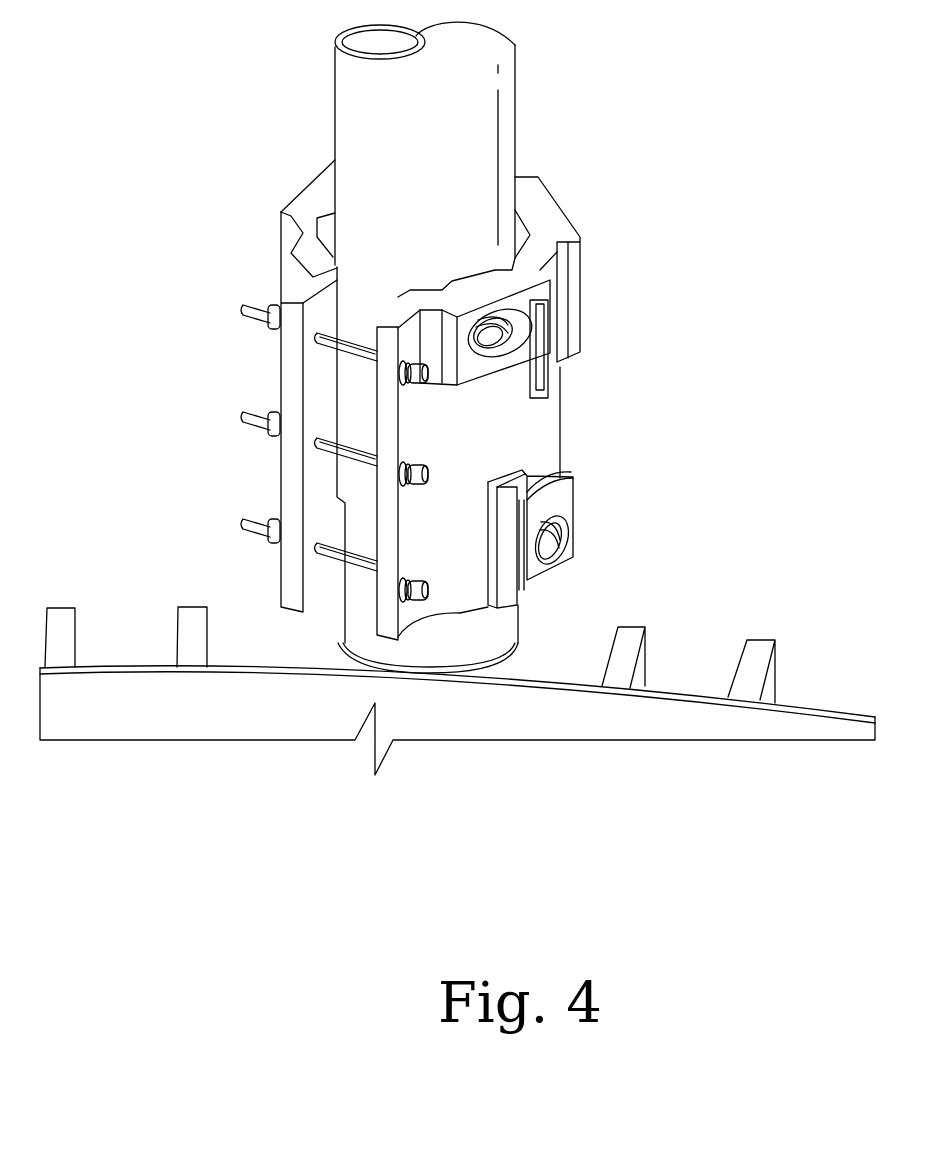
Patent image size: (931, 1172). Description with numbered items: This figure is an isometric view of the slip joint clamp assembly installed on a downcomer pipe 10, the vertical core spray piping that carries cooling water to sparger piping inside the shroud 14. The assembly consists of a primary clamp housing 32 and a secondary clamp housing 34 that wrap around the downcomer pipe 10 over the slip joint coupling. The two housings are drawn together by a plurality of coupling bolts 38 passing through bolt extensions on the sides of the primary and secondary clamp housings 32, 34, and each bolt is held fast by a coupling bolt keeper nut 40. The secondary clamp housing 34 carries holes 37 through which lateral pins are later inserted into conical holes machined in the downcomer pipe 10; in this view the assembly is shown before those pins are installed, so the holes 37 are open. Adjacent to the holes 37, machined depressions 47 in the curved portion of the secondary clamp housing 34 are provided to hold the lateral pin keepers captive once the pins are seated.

The downcomer pipe 10 is at (487, 103).
The shroud 14 is at (685, 693).
The primary clamp housing 32 is at (300, 232).
The secondary clamp housing 34 is at (552, 214).
The holes 37 is at (503, 333).
The coupling bolts 38 is at (427, 387).
The coupling bolt keeper nuts 40 is at (253, 320).
The machined depressions 47 is at (545, 384).